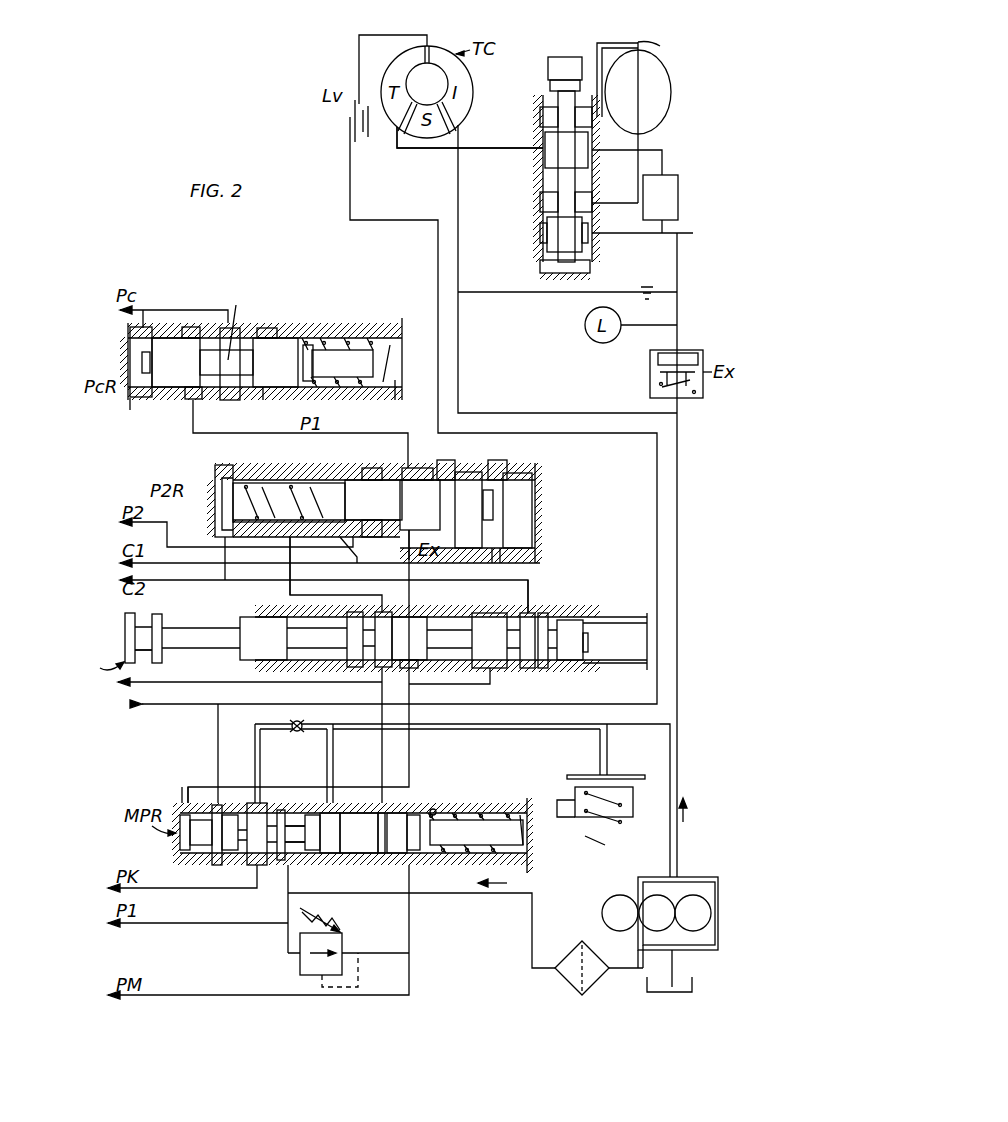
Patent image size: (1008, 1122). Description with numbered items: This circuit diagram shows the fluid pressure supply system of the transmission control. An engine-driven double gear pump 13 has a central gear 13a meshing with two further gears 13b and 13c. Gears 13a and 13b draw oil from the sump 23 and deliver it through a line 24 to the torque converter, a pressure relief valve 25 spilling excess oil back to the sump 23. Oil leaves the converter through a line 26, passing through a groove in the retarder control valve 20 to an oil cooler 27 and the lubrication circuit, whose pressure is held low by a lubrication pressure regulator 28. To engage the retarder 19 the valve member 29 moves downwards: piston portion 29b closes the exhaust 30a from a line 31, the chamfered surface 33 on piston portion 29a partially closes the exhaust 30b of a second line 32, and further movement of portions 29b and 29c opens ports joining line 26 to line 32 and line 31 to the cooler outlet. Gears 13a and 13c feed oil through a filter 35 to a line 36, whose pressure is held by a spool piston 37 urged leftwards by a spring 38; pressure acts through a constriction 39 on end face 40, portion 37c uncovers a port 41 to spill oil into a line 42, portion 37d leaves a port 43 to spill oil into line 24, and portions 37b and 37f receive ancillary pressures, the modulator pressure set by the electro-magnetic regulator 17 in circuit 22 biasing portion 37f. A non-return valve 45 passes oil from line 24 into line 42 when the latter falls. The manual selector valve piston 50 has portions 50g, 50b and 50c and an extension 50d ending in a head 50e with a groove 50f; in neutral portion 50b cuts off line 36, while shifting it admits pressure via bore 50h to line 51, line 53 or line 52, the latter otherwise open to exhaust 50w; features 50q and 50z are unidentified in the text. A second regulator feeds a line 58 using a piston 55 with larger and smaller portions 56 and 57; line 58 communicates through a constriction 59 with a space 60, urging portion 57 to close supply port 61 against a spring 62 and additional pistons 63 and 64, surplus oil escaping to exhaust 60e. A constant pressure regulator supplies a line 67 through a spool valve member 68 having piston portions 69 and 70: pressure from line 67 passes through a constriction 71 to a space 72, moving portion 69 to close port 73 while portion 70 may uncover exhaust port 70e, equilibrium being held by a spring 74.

The oil pump 13 is at (648, 916).
The central gear 13a is at (657, 905).
The gear 13b is at (693, 925).
The gear 13c is at (620, 913).
The modulator pressure regulator 17 is at (300, 966).
The retarder 19 is at (672, 105).
The retarder control valve 20 is at (540, 154).
The PM circuit 22 is at (226, 995).
The sump 23 is at (692, 992).
The line 24 is at (677, 446).
The pressure relief valve 25 is at (575, 793).
The line 26 is at (466, 148).
The oil cooler 27 is at (660, 190).
The lubrication pressure regulator 28 is at (650, 376).
The valve member 29 is at (540, 145).
The piston portion 29a is at (552, 68).
The piston portion 29b is at (545, 140).
The piston portion 29c is at (547, 232).
The exhaust 30a is at (540, 195).
The exhaust 30b is at (593, 70).
The line 31 is at (638, 178).
The second line 32 is at (662, 46).
The chamfered surface 33 is at (550, 88).
The filter 35 is at (590, 990).
The line 36 is at (409, 760).
The regulator piston 37 is at (330, 826).
The piston portion 37b is at (228, 860).
The piston portion 37c is at (282, 862).
The piston portion 37d is at (322, 860).
The piston portion 37f is at (434, 806).
The spring 38 is at (486, 803).
The constriction 39 is at (182, 796).
The end face 40 is at (180, 852).
The port 41 is at (263, 810).
The line 42 is at (196, 888).
The port 43 is at (298, 815).
The non-return valve 45 is at (306, 722).
The piston 50 is at (365, 638).
The piston valve portion 50b is at (468, 615).
The piston valve portion 50c is at (575, 632).
The extension 50d is at (208, 650).
The head 50e is at (126, 620).
The groove 50f is at (155, 655).
The piston valve portion 50g is at (410, 616).
The bore 50h is at (520, 615).
The valve land 50q is at (276, 648).
The exhaust 50w is at (560, 668).
The valve port 50z is at (290, 612).
The line 51 is at (311, 593).
The line 52 is at (534, 605).
The line 53 is at (243, 683).
The piston valve member 55 is at (450, 470).
The larger piston portion 56 is at (508, 478).
The smaller piston portion 57 is at (405, 478).
The line 58 is at (168, 528).
The constriction 59 is at (505, 556).
The space 60 is at (495, 515).
The exhaust 60e is at (347, 558).
The port 61 is at (412, 542).
The spring 62 is at (250, 482).
The additional piston 63 is at (262, 482).
The additional piston 64 is at (312, 482).
The line 67 is at (166, 345).
The valve member 68 is at (249, 321).
The piston portion 69 is at (196, 336).
The piston portion 70 is at (272, 352).
The exhaust port 70e is at (265, 400).
The constriction 71 is at (150, 325).
The space 72 is at (138, 400).
The port 73 is at (224, 352).
The spring 74 is at (333, 338).